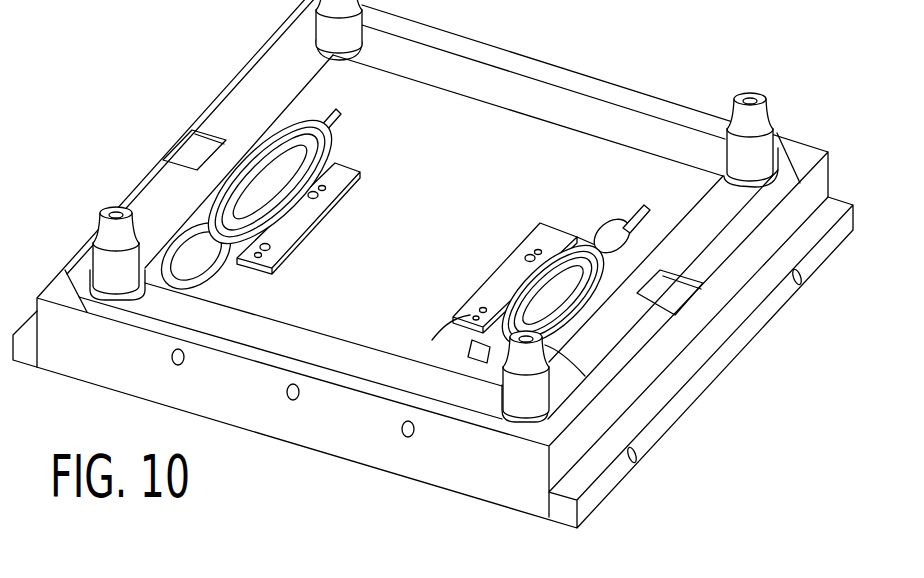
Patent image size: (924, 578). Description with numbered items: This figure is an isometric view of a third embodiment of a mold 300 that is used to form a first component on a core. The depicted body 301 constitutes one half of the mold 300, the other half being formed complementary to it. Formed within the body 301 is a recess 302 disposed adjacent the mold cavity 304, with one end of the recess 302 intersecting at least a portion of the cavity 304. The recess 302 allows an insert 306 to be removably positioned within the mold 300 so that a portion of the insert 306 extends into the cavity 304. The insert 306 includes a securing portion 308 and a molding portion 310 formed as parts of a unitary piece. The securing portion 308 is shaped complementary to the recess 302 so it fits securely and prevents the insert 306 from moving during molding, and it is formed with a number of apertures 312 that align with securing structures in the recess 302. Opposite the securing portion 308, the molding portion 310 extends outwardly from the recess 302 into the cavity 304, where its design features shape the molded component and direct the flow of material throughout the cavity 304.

The mold 300 is at (847, 142).
The body 301 is at (538, 78).
The recess 302 is at (558, 234).
The mold cavity 304 is at (598, 323).
The insert 306 is at (458, 308).
The securing portion 308 is at (505, 272).
The molding portion 310 is at (585, 376).
The apertures 312 is at (482, 311).